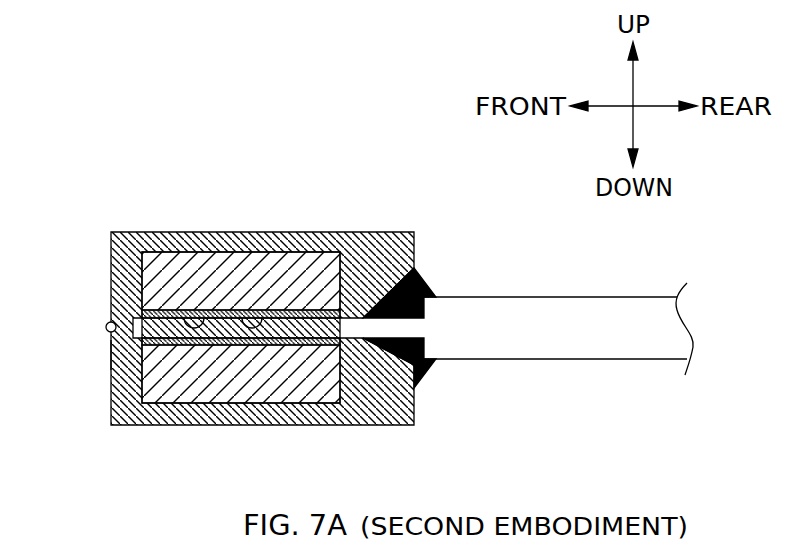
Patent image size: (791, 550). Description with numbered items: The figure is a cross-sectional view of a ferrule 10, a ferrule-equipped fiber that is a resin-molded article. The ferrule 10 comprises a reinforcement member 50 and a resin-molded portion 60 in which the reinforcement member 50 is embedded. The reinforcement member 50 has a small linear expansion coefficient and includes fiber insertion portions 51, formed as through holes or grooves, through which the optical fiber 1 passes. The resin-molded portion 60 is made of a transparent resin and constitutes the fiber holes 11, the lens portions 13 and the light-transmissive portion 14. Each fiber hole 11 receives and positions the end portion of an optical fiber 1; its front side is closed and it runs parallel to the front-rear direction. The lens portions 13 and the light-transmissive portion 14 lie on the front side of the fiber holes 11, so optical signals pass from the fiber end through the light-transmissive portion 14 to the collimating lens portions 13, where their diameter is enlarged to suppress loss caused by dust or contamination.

The ferrule 10 is at (135, 156).
The optical fiber 1 is at (577, 347).
The fiber hole 11 is at (258, 317).
The lens portion 13 is at (106, 327).
The light-transmissive portion 14 is at (114, 353).
The reinforcement member 50 is at (313, 262).
The fiber insertion portion 51 is at (200, 312).
The resin-molded portion 60 is at (370, 243).